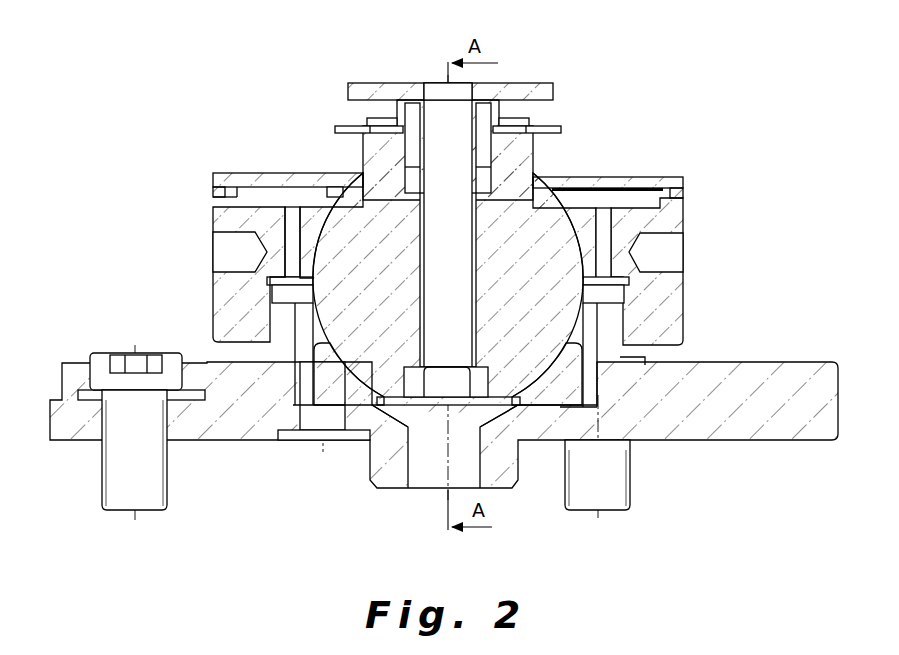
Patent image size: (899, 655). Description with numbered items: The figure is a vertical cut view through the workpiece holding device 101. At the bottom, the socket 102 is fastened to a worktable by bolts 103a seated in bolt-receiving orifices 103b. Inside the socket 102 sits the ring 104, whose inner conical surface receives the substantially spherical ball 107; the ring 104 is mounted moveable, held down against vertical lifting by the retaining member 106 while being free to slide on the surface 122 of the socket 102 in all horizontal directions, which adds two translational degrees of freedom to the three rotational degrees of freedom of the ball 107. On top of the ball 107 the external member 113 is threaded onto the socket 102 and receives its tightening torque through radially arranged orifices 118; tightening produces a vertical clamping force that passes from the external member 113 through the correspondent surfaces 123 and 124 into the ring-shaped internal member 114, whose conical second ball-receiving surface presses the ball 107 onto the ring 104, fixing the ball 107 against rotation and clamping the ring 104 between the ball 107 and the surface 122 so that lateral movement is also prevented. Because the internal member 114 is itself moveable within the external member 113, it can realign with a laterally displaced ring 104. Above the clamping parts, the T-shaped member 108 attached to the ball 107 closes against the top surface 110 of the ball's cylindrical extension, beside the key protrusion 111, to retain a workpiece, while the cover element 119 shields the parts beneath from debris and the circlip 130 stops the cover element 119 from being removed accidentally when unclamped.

The workpiece holding device 101 is at (745, 128).
The socket 102 is at (746, 462).
The bolts 103a is at (168, 487).
The bolt-receiving orifices 103b is at (98, 441).
The ring 104 is at (483, 425).
The retaining member 106 is at (300, 453).
The ball 107 is at (355, 268).
The T-shaped member 108 is at (523, 82).
The top surface 110 is at (375, 116).
The key protrusion 111 is at (395, 120).
The external member 113 is at (683, 307).
The internal member 114 is at (340, 238).
The radially arranged orifices 118 is at (663, 255).
The cover element 119 is at (683, 190).
The surface 122 is at (582, 407).
The correspondent surface of the external member 123 is at (603, 207).
The correspondent surface of the internal member 124 is at (545, 210).
The circlip 130 is at (337, 127).